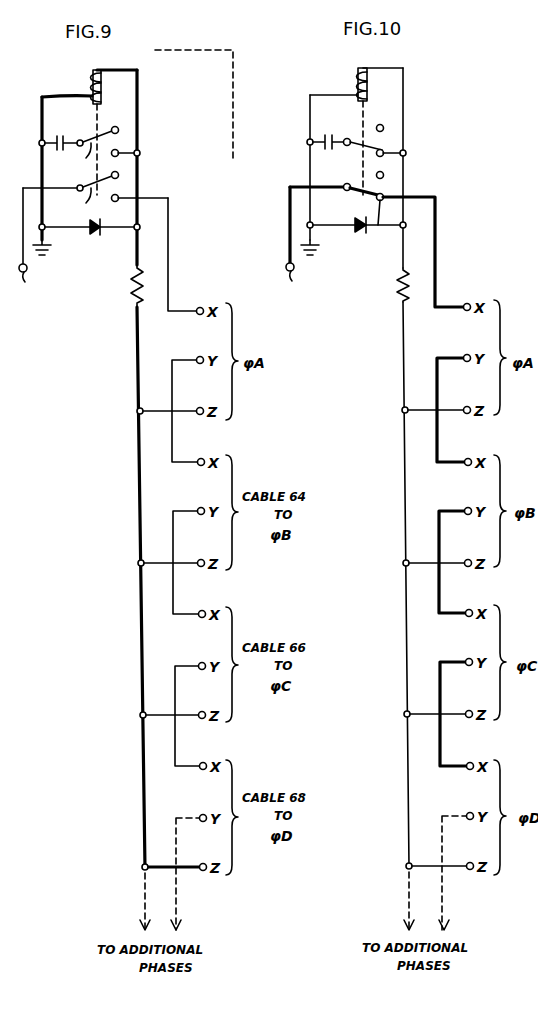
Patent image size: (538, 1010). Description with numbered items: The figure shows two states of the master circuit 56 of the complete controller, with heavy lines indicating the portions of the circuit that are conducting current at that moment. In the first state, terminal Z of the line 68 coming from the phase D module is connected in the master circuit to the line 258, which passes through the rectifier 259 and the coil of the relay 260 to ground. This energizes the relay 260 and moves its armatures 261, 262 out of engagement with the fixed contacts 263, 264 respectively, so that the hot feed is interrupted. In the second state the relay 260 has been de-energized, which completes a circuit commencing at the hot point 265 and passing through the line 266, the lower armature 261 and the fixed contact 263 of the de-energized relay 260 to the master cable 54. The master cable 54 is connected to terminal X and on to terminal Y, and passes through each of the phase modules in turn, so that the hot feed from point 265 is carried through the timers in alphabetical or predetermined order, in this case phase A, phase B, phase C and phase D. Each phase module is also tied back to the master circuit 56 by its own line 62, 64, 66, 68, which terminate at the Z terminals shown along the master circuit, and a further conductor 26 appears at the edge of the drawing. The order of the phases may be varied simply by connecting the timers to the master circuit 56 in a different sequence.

In FIG. 10, the conductor 26 is at (531, 166).
In FIG. 9, the master cable 54 is at (169, 243).
In FIG. 10, the master cable 54 is at (437, 258).
In FIG. 9, the master circuit 56 is at (190, 45).
In FIG. 9, the line 62 is at (152, 408).
In FIG. 10, the line 62 is at (420, 408).
In FIG. 9, the line 64 is at (153, 560).
In FIG. 10, the line 64 is at (421, 560).
In FIG. 9, the line 66 is at (154, 712).
In FIG. 10, the line 66 is at (422, 712).
In FIG. 9, the line 68 is at (156, 864).
In FIG. 10, the line 68 is at (422, 864).
In FIG. 9, the line 258 is at (138, 366).
In FIG. 10, the line 258 is at (403, 362).
In FIG. 9, the rectifier 259 is at (131, 285).
In FIG. 10, the rectifier 259 is at (398, 296).
In FIG. 9, the relay 260 is at (90, 83).
In FIG. 10, the relay 260 is at (356, 82).
In FIG. 9, the armature 261 is at (67, 220).
In FIG. 10, the armature 261 is at (361, 198).
In FIG. 9, the armature 262 is at (75, 154).
In FIG. 10, the armature 262 is at (357, 140).
In FIG. 9, the fixed contact 263 is at (119, 195).
In FIG. 10, the fixed contact 263 is at (377, 214).
In FIG. 9, the fixed contact 264 is at (119, 151).
In FIG. 10, the fixed contact 264 is at (386, 158).
In FIG. 9, the hot point 265 is at (28, 283).
In FIG. 10, the hot point 265 is at (291, 281).
In FIG. 10, the line 266 is at (290, 210).